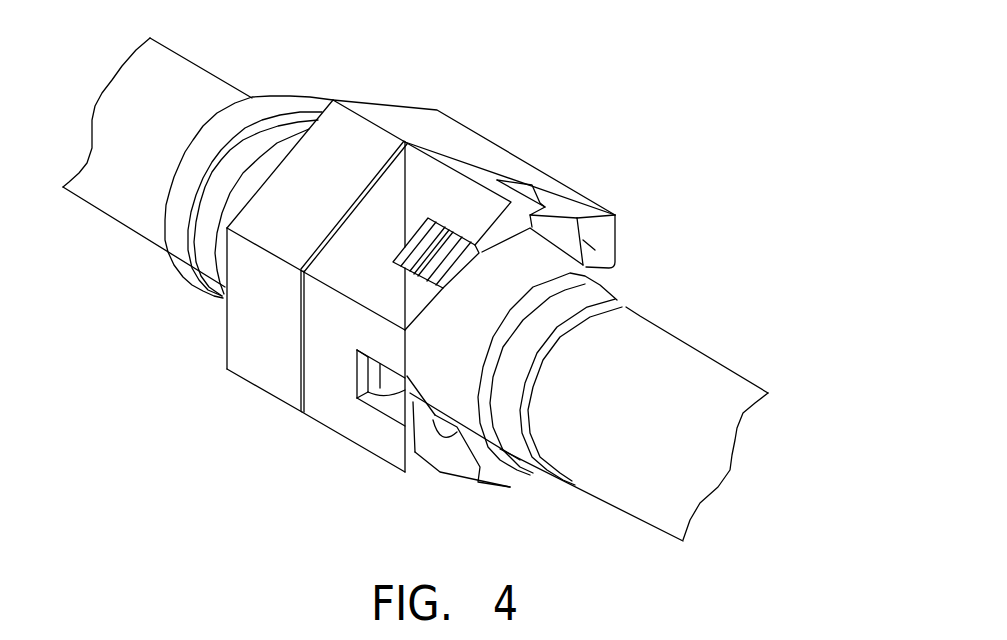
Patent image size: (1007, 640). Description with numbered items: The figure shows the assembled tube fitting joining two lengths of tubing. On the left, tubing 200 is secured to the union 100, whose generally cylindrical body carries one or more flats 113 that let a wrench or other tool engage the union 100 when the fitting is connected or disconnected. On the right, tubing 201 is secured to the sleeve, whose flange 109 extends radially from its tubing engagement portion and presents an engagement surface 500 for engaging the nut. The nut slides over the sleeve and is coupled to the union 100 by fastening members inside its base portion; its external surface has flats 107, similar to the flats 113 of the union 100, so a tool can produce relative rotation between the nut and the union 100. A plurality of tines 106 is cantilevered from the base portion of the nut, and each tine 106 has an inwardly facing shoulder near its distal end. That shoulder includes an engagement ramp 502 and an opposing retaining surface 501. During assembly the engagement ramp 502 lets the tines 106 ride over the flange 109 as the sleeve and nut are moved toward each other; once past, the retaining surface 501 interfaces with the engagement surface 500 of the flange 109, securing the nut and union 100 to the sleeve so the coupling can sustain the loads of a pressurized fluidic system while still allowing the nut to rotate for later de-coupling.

The tubing 200 is at (160, 70).
The union 100 is at (264, 108).
The flats 113 is at (255, 340).
The flats 107 is at (325, 390).
The retaining surface 501 is at (368, 398).
The flange 109 is at (462, 248).
The tines 106 is at (562, 196).
The engagement ramp 502 is at (613, 256).
The engagement surface 500 is at (450, 432).
The tubing 201 is at (633, 497).